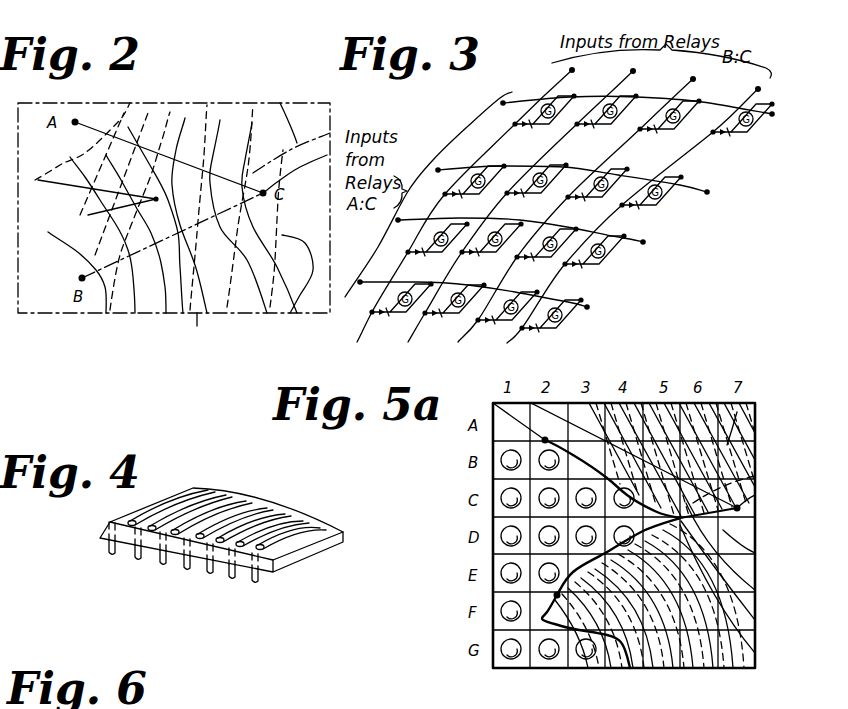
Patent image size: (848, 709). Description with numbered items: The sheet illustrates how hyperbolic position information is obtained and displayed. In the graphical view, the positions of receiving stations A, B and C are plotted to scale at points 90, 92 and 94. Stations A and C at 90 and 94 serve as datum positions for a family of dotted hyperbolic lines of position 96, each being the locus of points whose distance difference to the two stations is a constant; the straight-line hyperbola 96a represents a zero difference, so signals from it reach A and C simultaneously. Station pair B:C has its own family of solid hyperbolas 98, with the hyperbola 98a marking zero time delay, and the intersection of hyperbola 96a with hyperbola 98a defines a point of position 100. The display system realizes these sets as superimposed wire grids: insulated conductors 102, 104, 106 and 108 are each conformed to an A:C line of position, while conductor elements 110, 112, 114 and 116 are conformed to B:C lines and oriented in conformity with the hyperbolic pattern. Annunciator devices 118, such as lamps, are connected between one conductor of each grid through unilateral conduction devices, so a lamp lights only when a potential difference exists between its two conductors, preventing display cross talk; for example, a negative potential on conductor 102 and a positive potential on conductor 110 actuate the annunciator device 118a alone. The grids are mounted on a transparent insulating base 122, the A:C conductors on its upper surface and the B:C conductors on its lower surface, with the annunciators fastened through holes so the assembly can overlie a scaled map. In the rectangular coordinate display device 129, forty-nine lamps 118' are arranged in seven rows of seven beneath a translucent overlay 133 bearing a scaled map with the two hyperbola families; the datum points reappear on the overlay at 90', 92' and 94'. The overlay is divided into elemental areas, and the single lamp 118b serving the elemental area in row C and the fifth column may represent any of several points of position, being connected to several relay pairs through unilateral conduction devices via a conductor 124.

In FIG. 2, the point of station A 90 is at (90, 104).
In FIG. 2, the point of station B 92 is at (59, 272).
In FIG. 2, the point of station C 94 is at (294, 176).
In FIG. 2, the hyperbolic lines of position 96 is at (128, 118).
In FIG. 2, the zero-difference hyperbola 96a is at (218, 120).
In FIG. 2, the hyperbolic lines of position 98 is at (113, 312).
In FIG. 2, the zero-delay hyperbola 98a is at (200, 329).
In FIG. 2, the point of position 100 is at (88, 215).
In FIG. 3, the electrical conductor 102 is at (372, 286).
In FIG. 4, the electrical conductor 102 is at (210, 493).
In FIG. 3, the electrical conductor 104 is at (400, 225).
In FIG. 4, the electrical conductor 104 is at (235, 501).
In FIG. 3, the electrical conductor 106 is at (440, 176).
In FIG. 4, the electrical conductor 106 is at (268, 507).
In FIG. 3, the electrical conductor 108 is at (500, 112).
In FIG. 4, the electrical conductor 108 is at (300, 511).
In FIG. 3, the electrical conductor element 110 is at (572, 70).
In FIG. 4, the electrical conductor element 110 is at (112, 550).
In FIG. 3, the electrical conductor element 112 is at (633, 71).
In FIG. 4, the electrical conductor element 112 is at (140, 556).
In FIG. 3, the electrical conductor element 114 is at (693, 79).
In FIG. 4, the electrical conductor element 114 is at (164, 562).
In FIG. 3, the electrical conductor element 116 is at (758, 89).
In FIG. 4, the electrical conductor element 116 is at (187, 568).
In FIG. 3, the annunciator device 118 is at (589, 222).
In FIG. 3, the annunciator device 118a is at (400, 322).
In FIG. 4, the transparent insulating base 122 is at (333, 538).
In FIG. 5a, the conductor 124 is at (626, 556).
In FIG. 5a, the rectangular coordinate display device 129 is at (477, 522).
In FIG. 5a, the translucent overlay 133 is at (737, 412).
In FIG. 5a, the datum point of station A on overlay 90' is at (611, 438).
In FIG. 5a, the datum point of station B on overlay 92' is at (563, 593).
In FIG. 5a, the datum point of station C on overlay 94' is at (715, 500).
In FIG. 5a, the lamps 118' is at (533, 574).
In FIG. 5a, the lamp serving elemental area C-5 118b is at (668, 522).